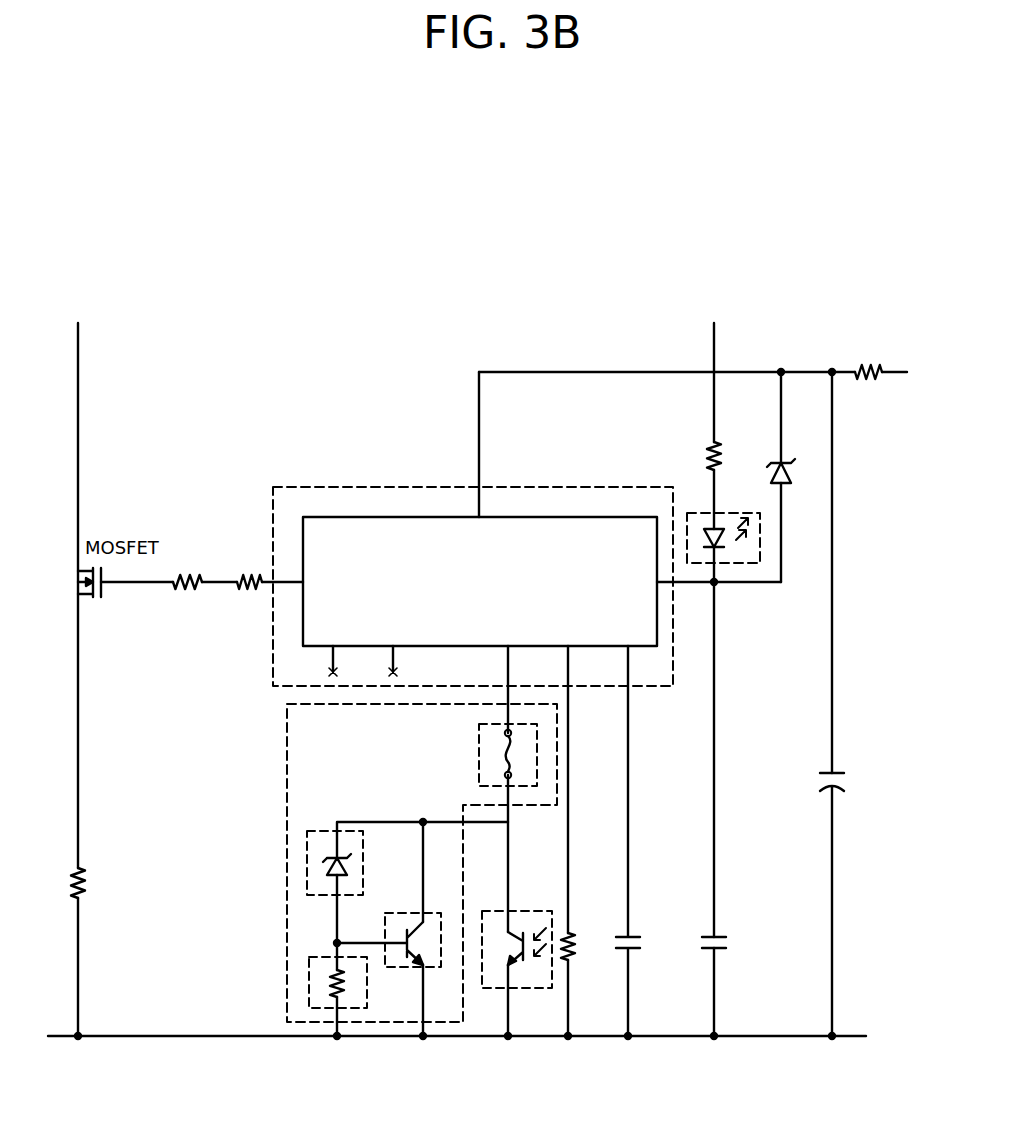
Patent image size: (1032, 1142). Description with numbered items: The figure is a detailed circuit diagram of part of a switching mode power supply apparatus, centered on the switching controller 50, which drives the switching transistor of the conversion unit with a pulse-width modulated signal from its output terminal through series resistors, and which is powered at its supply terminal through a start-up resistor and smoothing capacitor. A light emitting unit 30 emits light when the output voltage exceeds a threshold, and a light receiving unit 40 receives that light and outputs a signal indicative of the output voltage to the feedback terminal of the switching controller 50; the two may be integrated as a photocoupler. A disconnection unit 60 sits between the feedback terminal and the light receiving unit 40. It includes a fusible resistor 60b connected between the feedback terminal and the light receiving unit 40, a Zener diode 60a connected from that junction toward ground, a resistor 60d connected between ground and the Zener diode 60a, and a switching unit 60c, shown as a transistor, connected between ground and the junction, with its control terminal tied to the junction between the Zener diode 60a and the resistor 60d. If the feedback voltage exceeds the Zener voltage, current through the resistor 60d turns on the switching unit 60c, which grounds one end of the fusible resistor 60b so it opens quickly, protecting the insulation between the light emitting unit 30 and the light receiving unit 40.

The switching controller 50 is at (307, 487).
The light emitting unit 30 is at (742, 565).
The disconnection unit 60 is at (287, 793).
The Zener diode 60a is at (307, 872).
The fusible resistor 60b is at (479, 757).
The switching unit 60c is at (385, 919).
The resistor 60d is at (309, 987).
The light receiving unit 40 is at (532, 990).